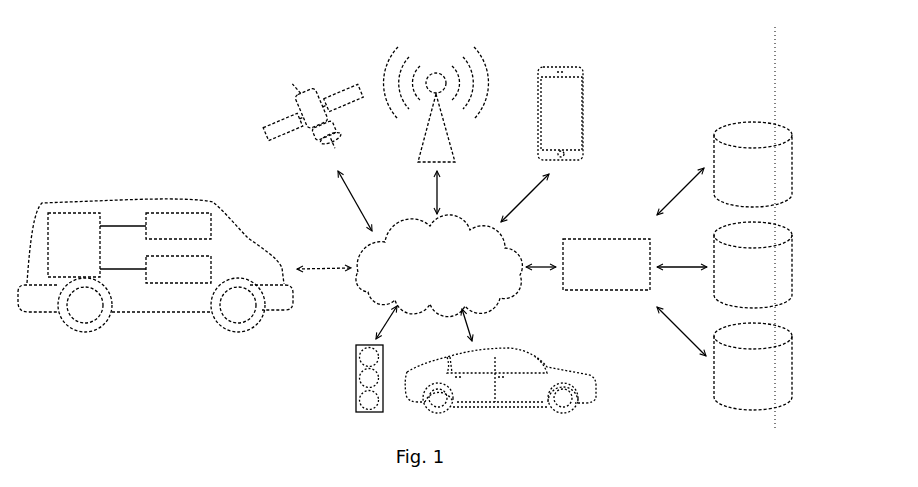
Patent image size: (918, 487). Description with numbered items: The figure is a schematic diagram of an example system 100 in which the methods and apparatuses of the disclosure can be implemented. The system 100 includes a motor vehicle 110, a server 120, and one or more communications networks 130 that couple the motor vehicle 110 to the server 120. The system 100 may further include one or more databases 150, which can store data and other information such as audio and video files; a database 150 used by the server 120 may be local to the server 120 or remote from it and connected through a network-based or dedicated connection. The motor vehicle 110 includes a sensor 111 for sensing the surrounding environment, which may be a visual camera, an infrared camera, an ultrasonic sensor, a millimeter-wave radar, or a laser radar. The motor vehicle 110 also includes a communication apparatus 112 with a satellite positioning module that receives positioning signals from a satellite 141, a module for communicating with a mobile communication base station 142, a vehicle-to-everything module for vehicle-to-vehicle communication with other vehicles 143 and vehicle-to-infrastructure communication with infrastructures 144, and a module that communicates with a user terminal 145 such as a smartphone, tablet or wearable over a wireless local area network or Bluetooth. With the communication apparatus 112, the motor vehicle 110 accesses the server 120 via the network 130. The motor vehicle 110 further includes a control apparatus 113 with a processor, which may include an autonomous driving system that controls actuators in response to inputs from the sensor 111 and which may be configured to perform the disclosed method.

The system 100 is at (721, 64).
The motor vehicle 110 is at (263, 245).
The sensor 111 is at (213, 267).
The communication apparatus 112 is at (213, 220).
The control apparatus 113 is at (77, 213).
The server 120 is at (606, 264).
The communications network 130 is at (439, 266).
The satellite 141 is at (300, 88).
The mobile communication base station 142 is at (488, 73).
The other vehicles 143 is at (560, 370).
The infrastructure 144 is at (357, 363).
The user terminal 145 is at (563, 64).
The database 150 is at (753, 266).